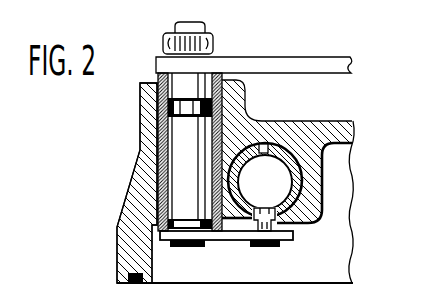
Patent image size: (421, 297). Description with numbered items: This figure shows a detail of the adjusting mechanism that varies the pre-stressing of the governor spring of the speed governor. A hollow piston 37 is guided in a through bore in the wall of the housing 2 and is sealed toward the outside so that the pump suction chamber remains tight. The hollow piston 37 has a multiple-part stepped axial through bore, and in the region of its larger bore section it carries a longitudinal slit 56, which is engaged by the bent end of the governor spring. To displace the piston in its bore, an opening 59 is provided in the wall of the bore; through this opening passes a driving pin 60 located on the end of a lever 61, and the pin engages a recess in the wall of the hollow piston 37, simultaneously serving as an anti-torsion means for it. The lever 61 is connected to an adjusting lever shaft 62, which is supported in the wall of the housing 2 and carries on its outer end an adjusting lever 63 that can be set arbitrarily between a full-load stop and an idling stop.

The housing 2 is at (312, 138).
The hollow piston 37 is at (298, 166).
The longitudinal slit 56 is at (263, 145).
The opening 59 is at (296, 236).
The driving pin 60 is at (274, 212).
The lever 61 is at (232, 241).
The adjusting lever shaft 62 is at (178, 146).
The adjusting lever 63 is at (292, 63).